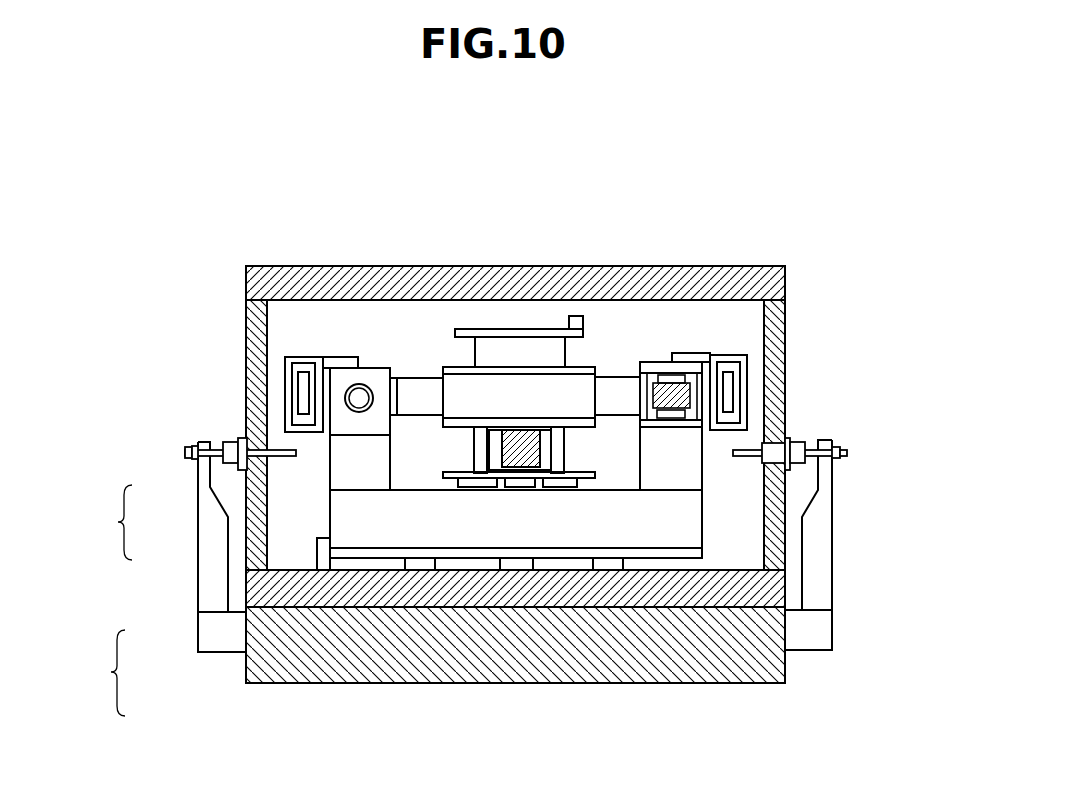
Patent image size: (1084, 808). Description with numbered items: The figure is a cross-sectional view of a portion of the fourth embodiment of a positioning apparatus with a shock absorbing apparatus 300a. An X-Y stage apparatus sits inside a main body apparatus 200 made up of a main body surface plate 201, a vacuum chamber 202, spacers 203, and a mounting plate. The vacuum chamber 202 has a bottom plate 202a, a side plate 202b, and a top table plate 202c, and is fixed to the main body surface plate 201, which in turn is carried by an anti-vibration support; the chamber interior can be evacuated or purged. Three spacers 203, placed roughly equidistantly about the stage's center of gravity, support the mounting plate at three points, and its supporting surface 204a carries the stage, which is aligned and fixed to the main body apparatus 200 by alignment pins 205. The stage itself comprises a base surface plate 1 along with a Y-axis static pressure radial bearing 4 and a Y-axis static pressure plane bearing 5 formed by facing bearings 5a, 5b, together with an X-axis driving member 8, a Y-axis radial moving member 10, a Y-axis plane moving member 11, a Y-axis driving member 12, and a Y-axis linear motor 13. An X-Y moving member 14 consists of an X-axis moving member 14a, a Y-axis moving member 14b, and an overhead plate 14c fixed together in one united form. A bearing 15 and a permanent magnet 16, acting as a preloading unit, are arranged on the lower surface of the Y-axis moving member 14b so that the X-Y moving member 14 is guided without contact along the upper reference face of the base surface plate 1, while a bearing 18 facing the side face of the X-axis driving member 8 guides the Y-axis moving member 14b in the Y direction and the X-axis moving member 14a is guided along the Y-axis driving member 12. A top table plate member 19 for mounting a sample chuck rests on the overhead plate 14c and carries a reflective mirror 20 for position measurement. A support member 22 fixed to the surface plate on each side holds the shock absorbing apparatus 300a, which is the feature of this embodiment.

The base surface plate 1 is at (688, 510).
The Y-axis static pressure radial bearing 4 is at (343, 375).
The Y-axis static pressure plane bearing 5 is at (665, 294).
The bearing 5a is at (665, 390).
The bearing 5b is at (678, 413).
The X-axis driving member 8 is at (528, 467).
The Y-axis radial moving member 10 is at (359, 398).
The Y-axis plane moving member 11 is at (636, 329).
The Y-axis driving member 12 is at (389, 377).
The Y-axis linear motor 13 is at (275, 350).
The X-Y moving member 14 is at (490, 606).
The X-axis moving member 14a is at (458, 398).
The Y-axis moving member 14b is at (478, 448).
The overhead plate 14c is at (453, 372).
The bearing 15 is at (483, 477).
The permanent magnet 16 is at (512, 470).
The bearing 18 is at (490, 455).
The top table plate member 19 is at (487, 331).
The reflective mirror 20 is at (575, 320).
The support member 22 is at (205, 478).
The main body apparatus 200 is at (491, 450).
The main body surface plate 201 is at (258, 663).
The vacuum chamber 202 is at (511, 422).
The bottom plate 202a is at (772, 588).
The side plate 202b is at (246, 410).
The top table plate 202c is at (758, 295).
The spacer 203 is at (418, 565).
The supporting surface 204a is at (362, 556).
The alignment pin 205 is at (323, 555).
The shock absorbing apparatus 300a is at (176, 434).